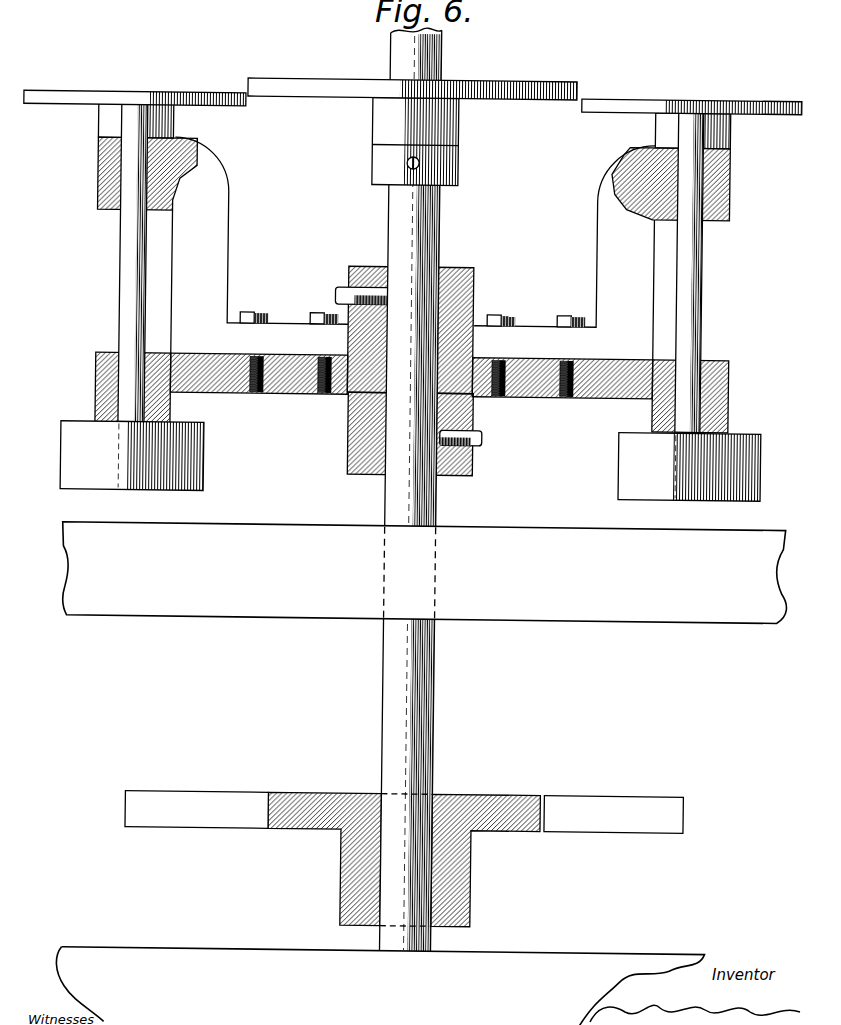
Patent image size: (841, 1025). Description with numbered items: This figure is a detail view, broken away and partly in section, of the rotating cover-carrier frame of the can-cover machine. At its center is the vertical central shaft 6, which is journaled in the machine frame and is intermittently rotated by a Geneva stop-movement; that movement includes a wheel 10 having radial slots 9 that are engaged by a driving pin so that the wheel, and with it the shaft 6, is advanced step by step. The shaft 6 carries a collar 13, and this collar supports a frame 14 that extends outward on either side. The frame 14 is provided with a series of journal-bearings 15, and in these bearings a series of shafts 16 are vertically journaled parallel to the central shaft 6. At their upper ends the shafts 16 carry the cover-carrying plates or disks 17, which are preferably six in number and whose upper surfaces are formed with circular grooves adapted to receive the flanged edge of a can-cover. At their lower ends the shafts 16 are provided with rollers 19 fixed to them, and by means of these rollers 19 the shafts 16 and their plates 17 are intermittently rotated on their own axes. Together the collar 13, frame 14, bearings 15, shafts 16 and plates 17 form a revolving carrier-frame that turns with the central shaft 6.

The central shaft 6 is at (422, 683).
The radial slots 9 is at (185, 798).
The wheel 10 is at (328, 797).
The collar 13 is at (476, 412).
The frame 14 is at (455, 296).
The journal-bearings 15 is at (105, 356).
The shafts 16 is at (130, 275).
The cover-carrying plates 17 is at (136, 99).
The rollers 19 is at (70, 464).